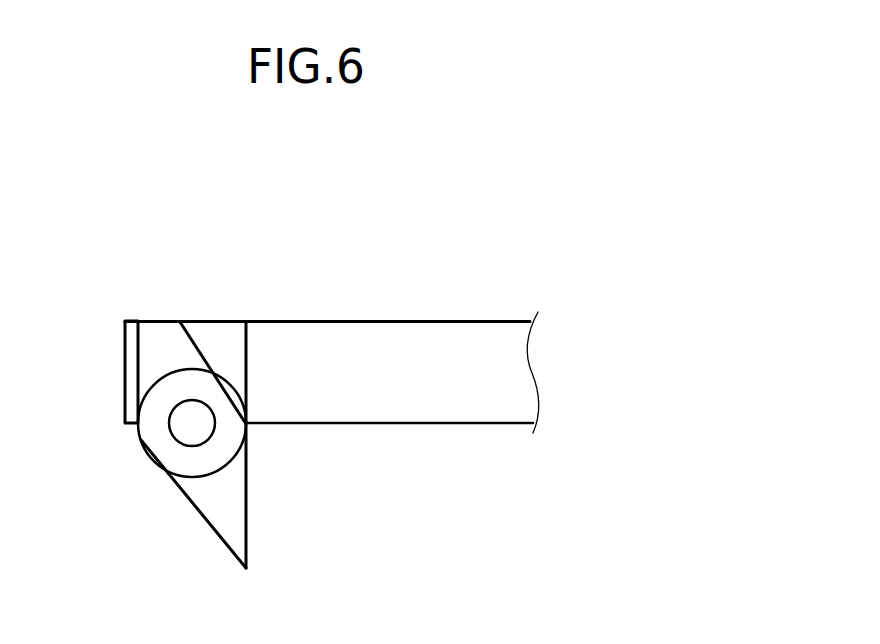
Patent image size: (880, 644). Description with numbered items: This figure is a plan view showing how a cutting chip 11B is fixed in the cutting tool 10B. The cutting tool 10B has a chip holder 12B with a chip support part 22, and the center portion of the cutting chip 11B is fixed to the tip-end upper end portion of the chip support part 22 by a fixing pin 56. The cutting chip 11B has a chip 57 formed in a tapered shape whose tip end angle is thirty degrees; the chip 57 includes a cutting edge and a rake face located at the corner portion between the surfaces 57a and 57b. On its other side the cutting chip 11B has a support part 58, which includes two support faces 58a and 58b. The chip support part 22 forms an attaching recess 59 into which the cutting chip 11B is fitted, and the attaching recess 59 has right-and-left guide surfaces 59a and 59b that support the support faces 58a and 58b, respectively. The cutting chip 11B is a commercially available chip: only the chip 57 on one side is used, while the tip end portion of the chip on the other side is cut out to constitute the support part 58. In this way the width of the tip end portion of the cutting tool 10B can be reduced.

The cutting tool 10B is at (415, 212).
The cutting chip 11B is at (262, 480).
The chip holder 12B is at (490, 305).
The chip support part 22 is at (331, 343).
The fixing pin 56 is at (187, 427).
The chip 57 is at (228, 528).
The surface 57a is at (247, 533).
The surface 57b is at (208, 530).
The support part 58 is at (160, 333).
The support face 58a is at (137, 353).
The support face 58b is at (200, 343).
The attaching recess 59 is at (233, 218).
The guide surface 59a is at (143, 332).
The guide surface 59b is at (186, 329).